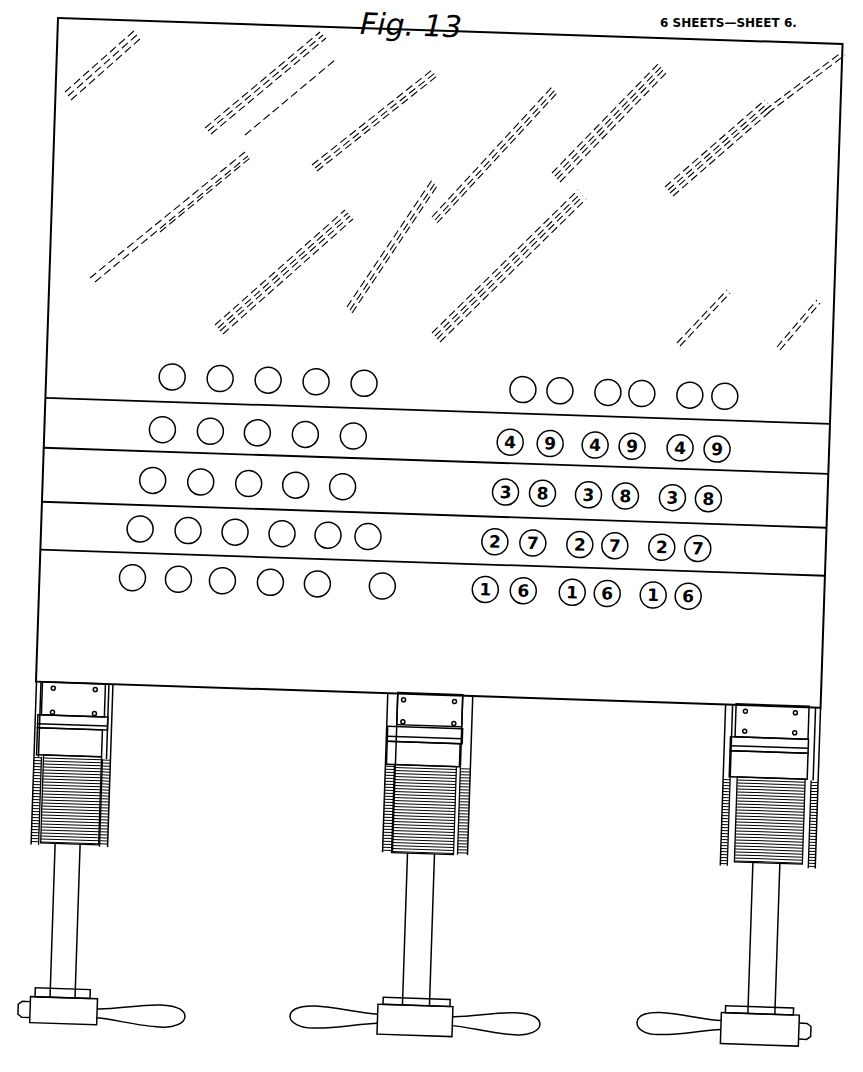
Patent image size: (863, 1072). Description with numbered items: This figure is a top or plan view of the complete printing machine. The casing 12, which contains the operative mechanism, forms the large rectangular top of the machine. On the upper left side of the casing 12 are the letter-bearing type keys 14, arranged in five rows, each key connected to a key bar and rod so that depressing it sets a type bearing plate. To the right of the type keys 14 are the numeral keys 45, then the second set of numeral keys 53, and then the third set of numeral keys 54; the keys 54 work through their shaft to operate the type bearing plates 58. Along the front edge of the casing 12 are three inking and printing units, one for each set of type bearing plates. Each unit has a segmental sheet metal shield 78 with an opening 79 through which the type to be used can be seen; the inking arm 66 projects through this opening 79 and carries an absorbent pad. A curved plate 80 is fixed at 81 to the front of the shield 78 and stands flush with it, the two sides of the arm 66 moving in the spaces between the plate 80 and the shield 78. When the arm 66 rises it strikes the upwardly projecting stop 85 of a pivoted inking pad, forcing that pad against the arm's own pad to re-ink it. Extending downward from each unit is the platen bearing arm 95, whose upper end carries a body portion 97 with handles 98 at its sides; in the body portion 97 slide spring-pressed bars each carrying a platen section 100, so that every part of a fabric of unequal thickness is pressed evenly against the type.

The casing 12 is at (440, 363).
The type keys 14 is at (259, 341).
The numeral keys 45 is at (512, 348).
The second set of numeral keys 53 is at (594, 345).
The third set of numeral keys 54 is at (707, 387).
The type bearing plates 58 is at (382, 586).
The fixing point of curved plate 81 is at (425, 710).
The upwardly projecting stop 85 is at (73, 699).
The inking arm 66 is at (699, 723).
The segmental sheet metal shield 78 is at (84, 786).
The curved plate 80 is at (70, 795).
The shield opening 79 is at (79, 825).
The platen bearing arm 95 is at (50, 877).
The platen section 100 is at (58, 971).
The handles 98 is at (409, 1020).
The body portion 97 is at (42, 1005).